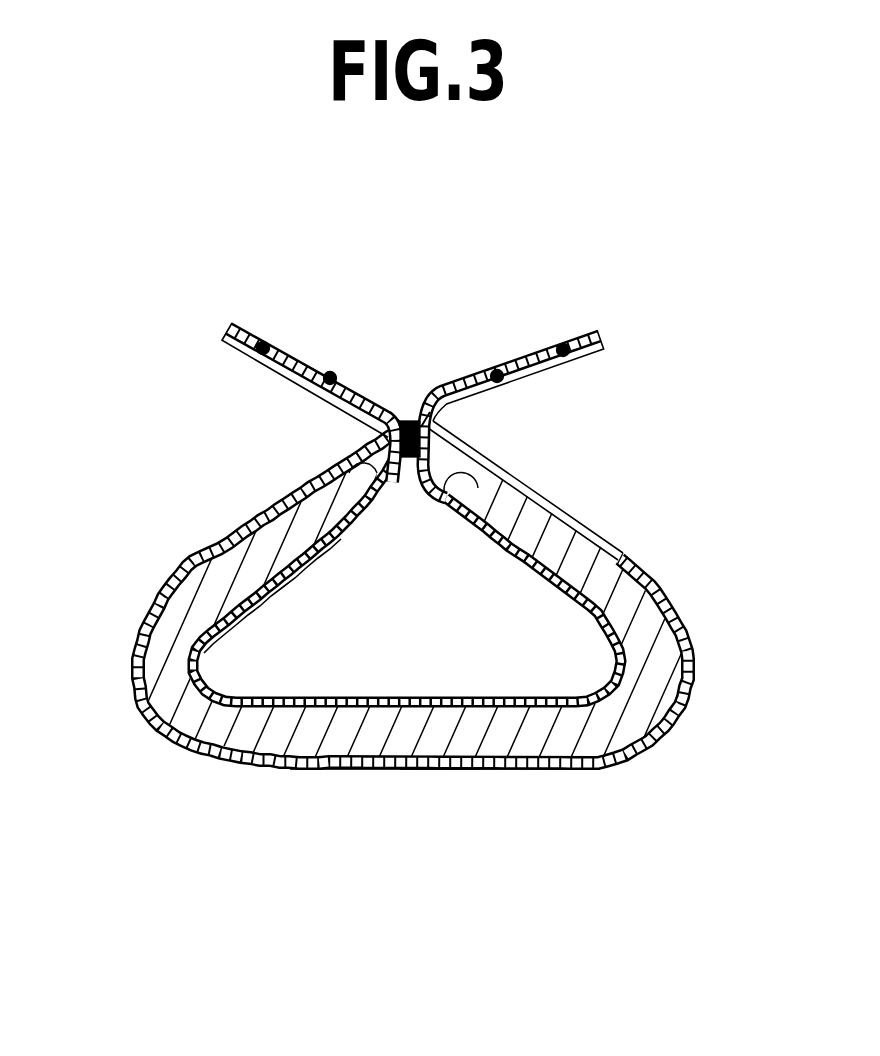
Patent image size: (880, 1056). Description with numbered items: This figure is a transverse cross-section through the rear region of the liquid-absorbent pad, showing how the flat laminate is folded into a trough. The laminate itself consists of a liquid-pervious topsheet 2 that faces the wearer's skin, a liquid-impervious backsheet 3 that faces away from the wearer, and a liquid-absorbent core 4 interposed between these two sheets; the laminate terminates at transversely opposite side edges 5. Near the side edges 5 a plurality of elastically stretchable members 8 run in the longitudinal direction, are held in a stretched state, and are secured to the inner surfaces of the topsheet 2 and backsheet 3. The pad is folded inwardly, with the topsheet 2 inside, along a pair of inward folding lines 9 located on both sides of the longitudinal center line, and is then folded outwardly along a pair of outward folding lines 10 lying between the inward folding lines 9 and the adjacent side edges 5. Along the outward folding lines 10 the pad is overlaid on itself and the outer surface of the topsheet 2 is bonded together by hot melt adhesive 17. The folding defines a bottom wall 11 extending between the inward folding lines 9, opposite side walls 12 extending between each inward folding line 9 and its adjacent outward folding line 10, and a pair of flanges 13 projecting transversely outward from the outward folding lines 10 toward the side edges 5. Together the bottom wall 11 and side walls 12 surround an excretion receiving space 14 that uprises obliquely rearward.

The liquid-pervious topsheet 2 is at (507, 745).
The liquid-impervious backsheet 3 is at (347, 768).
The liquid-absorbent core 4 is at (293, 768).
The side edges 5 is at (234, 327).
The elastically stretchable members 8 is at (322, 381).
The inward folding lines 9 is at (130, 689).
The outward folding lines 10 is at (394, 418).
The bottom wall 11 is at (443, 768).
The side walls 12 is at (228, 534).
The flanges 13 is at (296, 345).
The excretion receiving space 14 is at (623, 552).
The hot melt adhesive 17 is at (413, 421).